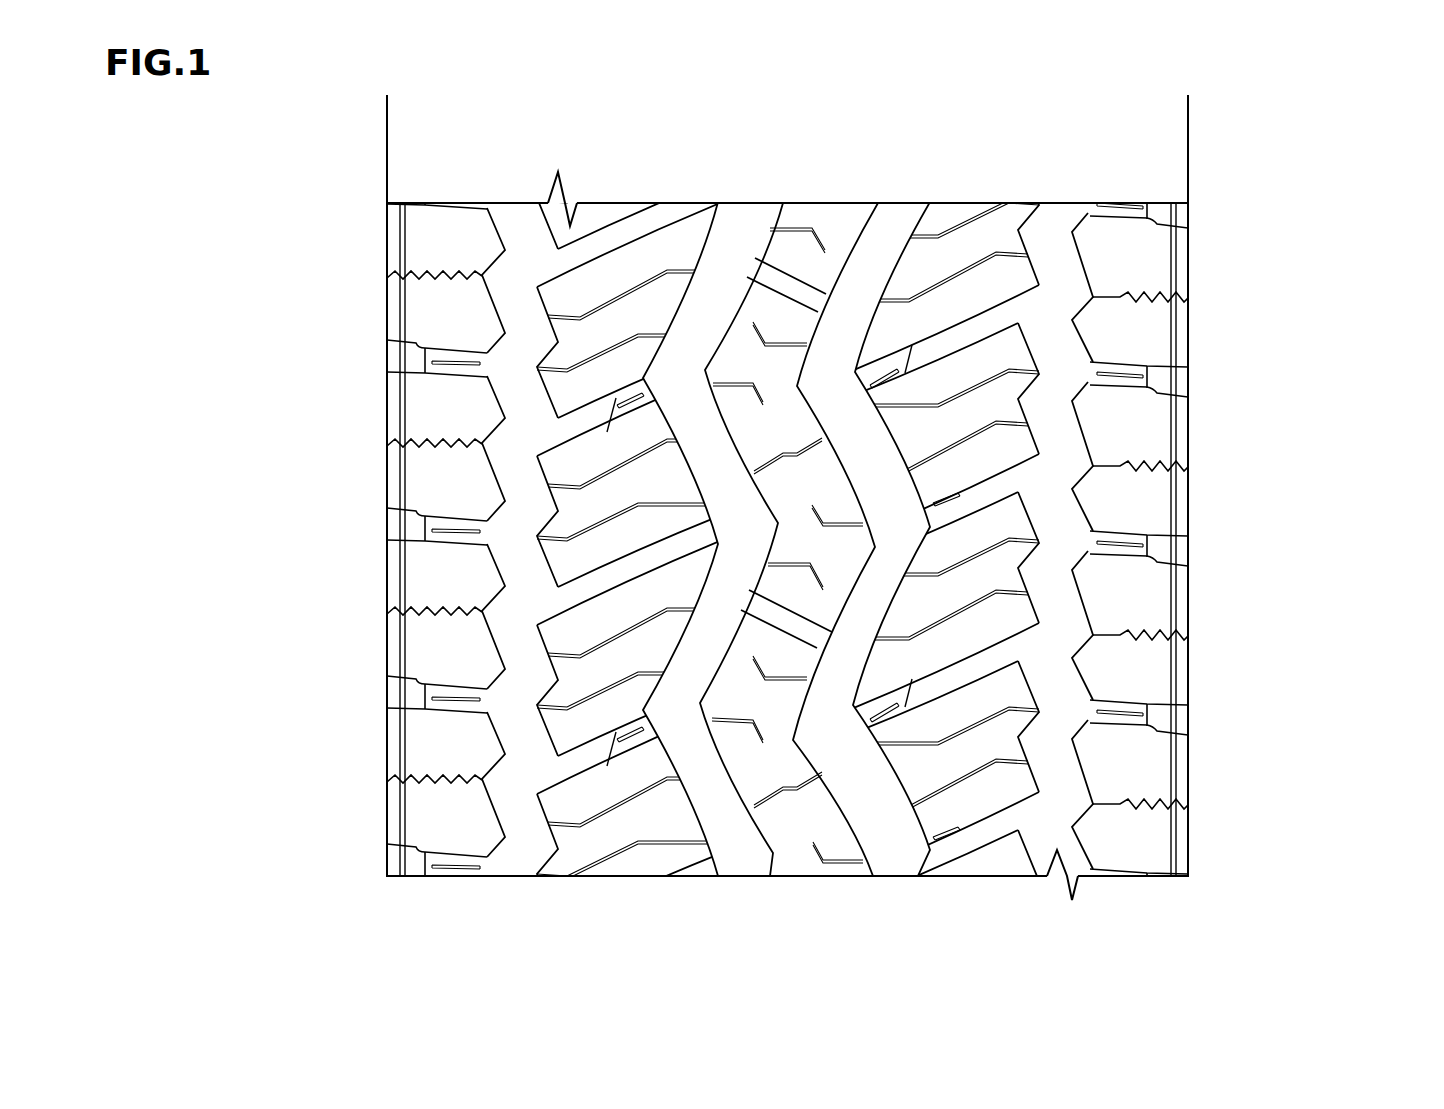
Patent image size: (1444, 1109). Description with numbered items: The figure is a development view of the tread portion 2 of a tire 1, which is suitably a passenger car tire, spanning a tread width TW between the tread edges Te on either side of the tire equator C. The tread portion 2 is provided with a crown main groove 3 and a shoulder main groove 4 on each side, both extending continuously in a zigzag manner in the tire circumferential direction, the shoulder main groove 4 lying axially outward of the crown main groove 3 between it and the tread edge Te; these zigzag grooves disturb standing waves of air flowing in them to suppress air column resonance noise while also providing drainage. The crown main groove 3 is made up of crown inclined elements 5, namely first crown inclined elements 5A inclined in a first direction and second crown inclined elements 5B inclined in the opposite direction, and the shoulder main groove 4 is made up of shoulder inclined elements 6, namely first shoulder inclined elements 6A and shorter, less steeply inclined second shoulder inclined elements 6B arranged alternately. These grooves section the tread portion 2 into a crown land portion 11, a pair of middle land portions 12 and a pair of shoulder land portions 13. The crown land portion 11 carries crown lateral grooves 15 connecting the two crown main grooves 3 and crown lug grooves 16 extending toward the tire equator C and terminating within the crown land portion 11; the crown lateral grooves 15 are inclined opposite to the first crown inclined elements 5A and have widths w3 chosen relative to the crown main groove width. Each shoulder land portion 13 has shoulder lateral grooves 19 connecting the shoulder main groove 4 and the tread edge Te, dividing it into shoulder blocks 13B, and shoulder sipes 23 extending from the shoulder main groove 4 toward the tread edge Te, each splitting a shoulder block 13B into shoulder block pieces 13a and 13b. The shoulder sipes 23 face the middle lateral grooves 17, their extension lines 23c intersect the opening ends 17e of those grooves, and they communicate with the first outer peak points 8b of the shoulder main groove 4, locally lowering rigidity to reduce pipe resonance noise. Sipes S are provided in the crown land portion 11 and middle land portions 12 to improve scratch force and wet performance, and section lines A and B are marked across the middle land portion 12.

The tire 1 is at (1378, 140).
The tread portion 2 is at (1285, 178).
The crown main groove 3 is at (738, 235).
The shoulder main groove 4 is at (522, 245).
The crown inclined elements 5 is at (786, 492).
The first crown inclined elements 5A is at (705, 578).
The second crown inclined elements 5B is at (712, 392).
The shoulder inclined elements 6 is at (1197, 395).
The first shoulder inclined elements 6A is at (1058, 352).
The second shoulder inclined elements 6B is at (1058, 300).
The first outer peak points 8b is at (483, 276).
The crown land portion 11 is at (842, 236).
The middle land portions 12 is at (612, 285).
The shoulder land portions 13 is at (708, 454).
The shoulder blocks 13B is at (445, 245).
The shoulder block piece 13a is at (420, 820).
The shoulder block piece 13b is at (420, 740).
The crown lateral grooves 15 is at (806, 292).
The crown lug grooves 16 is at (770, 862).
The middle lateral grooves 17 is at (955, 677).
The opening ends 17e is at (548, 778).
The shoulder lateral grooves 19 is at (398, 518).
The shoulder sipes 23 is at (450, 780).
The extension lines 23c is at (490, 783).
The tread width TW is at (387, 95).
The tread edge Te is at (387, 232).
The tire equator C is at (789, 905).
The sipes S is at (585, 758).
The widths of the crown lateral grooves w3 is at (944, 862).
The section line A- A is at (657, 437).
The section line B- B is at (730, 385).